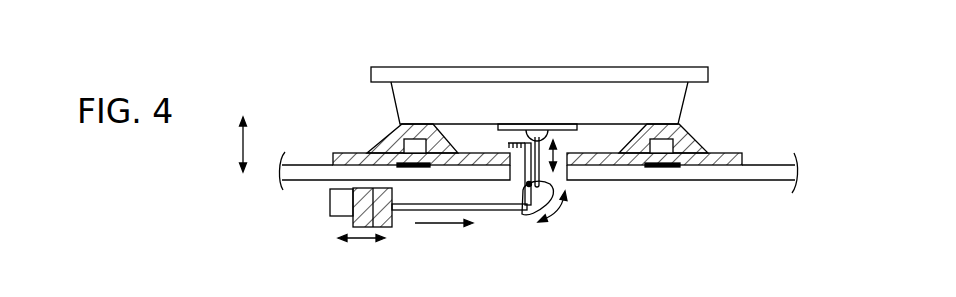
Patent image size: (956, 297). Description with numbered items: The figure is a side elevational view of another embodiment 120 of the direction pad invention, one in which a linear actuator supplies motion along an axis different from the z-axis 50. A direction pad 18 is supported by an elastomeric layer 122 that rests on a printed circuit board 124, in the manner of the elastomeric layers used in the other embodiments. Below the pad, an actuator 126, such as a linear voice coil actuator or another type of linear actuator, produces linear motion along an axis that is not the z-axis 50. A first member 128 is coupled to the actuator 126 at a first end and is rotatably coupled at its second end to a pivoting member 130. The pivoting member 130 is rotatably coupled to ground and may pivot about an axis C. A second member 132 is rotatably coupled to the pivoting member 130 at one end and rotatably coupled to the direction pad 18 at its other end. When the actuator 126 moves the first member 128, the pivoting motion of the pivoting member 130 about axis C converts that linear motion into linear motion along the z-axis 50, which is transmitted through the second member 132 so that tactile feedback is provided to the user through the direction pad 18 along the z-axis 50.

The embodiment 120 is at (506, 63).
The direction pad 18 is at (488, 93).
The second member 132 is at (578, 127).
The printed circuit board 124 is at (767, 166).
The elastomeric layer 122 is at (380, 143).
The z-axis 50 is at (242, 145).
The actuator 126 is at (337, 217).
The first member 128 is at (491, 212).
The pivoting member 130 is at (558, 183).
The axis C is at (527, 184).